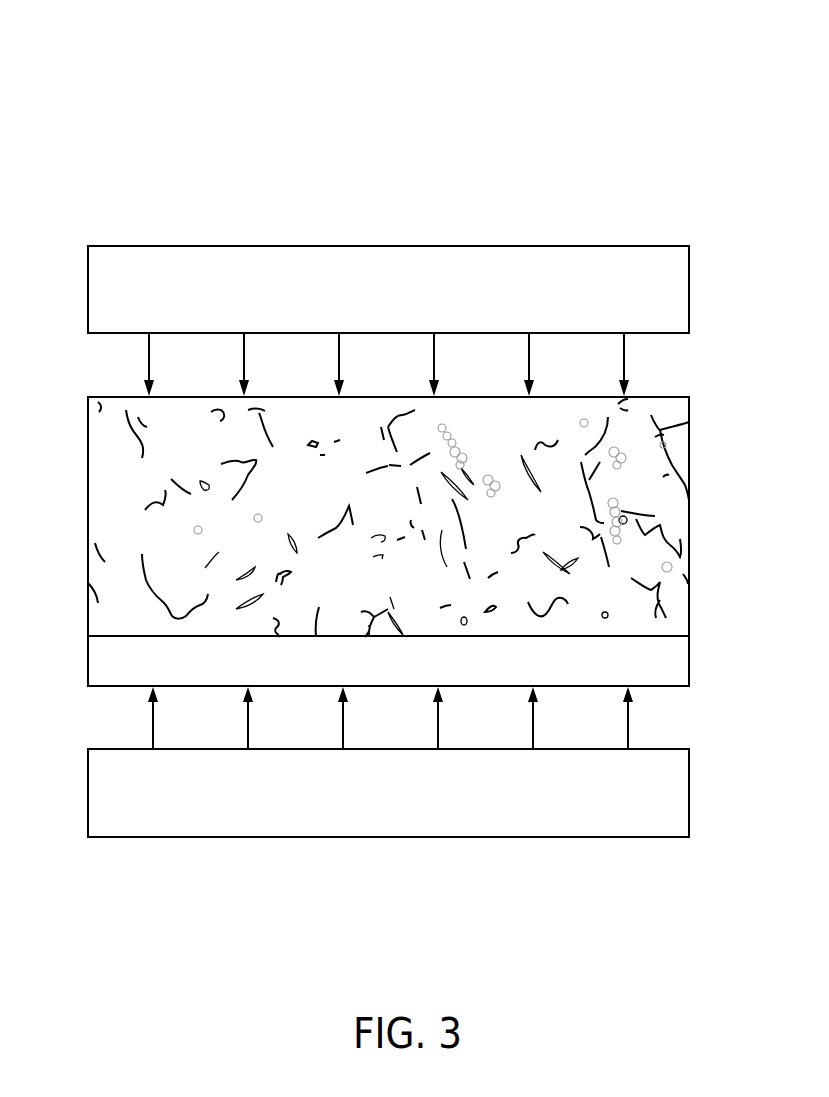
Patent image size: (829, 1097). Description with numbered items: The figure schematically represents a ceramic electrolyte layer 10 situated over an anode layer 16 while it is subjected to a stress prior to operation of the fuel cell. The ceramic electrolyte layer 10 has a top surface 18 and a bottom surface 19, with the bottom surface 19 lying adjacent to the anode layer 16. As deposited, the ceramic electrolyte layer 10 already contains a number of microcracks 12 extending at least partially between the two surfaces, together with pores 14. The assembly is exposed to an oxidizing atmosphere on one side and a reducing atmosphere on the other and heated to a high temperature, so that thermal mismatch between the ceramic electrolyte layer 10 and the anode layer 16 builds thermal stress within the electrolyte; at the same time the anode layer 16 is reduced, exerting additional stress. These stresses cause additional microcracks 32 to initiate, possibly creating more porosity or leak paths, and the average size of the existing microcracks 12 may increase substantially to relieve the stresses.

The ceramic electrolyte layer 10 is at (633, 85).
The microcracks 12 is at (130, 483).
The pores 14 is at (683, 550).
The anode layer 16 is at (683, 663).
The top surface 18 is at (117, 396).
The bottom surface 19 is at (90, 637).
The additional microcracks 32 is at (663, 477).